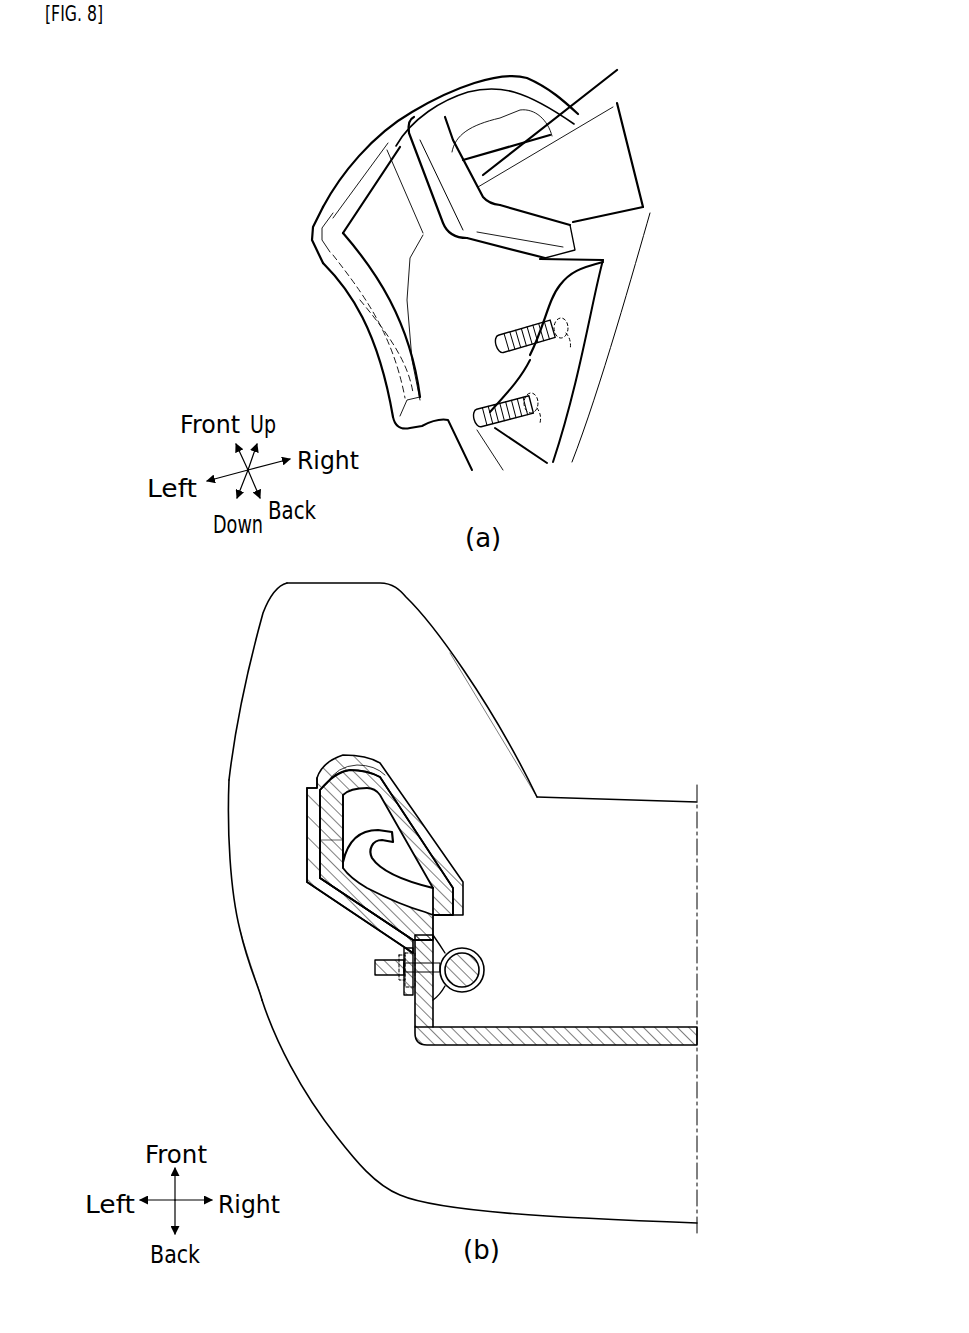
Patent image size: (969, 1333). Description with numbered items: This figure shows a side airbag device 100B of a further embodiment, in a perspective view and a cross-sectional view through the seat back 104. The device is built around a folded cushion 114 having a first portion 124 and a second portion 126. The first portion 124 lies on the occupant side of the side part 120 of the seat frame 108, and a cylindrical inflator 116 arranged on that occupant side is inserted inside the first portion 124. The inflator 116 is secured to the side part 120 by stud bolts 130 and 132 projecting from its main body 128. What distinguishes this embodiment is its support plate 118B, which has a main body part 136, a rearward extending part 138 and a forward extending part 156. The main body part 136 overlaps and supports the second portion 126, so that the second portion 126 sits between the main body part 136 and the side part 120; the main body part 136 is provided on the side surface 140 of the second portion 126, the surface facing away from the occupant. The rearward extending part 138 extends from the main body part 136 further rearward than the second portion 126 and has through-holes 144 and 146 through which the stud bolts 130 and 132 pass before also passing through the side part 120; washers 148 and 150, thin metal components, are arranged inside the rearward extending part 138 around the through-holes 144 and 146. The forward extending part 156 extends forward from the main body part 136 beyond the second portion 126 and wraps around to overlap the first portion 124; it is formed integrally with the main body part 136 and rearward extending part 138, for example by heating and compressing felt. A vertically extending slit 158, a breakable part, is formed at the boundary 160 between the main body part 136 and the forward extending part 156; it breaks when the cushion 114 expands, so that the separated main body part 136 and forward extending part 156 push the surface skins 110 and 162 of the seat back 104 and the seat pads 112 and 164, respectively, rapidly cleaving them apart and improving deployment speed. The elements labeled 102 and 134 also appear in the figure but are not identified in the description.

The side airbag device 100B is at (332, 106).
The vehicle body panel 102 is at (499, 650).
The seat back 104 is at (335, 1076).
The seat frame 108 is at (553, 1046).
The surface skin 110 is at (230, 868).
The seat pad 112 is at (257, 920).
The cushion 114 is at (442, 115).
The inflator 116 is at (480, 967).
The support plate 118B is at (329, 287).
The side part 120 is at (613, 153).
The first portion 124 is at (542, 104).
The second portion 126 is at (453, 183).
The main body 128 is at (480, 991).
The stud bolt 130 is at (520, 332).
The stud bolt 132 is at (487, 410).
The hook portion 134 is at (503, 183).
The main body part 136 is at (380, 361).
The rearward extending part 138 is at (547, 367).
The side surface 140 is at (330, 843).
The through-hole 144 is at (553, 320).
The through-hole 146 is at (540, 412).
The washer 148 is at (560, 338).
The washer 150 is at (537, 398).
The forward extending part 156 is at (493, 80).
The slit 158 is at (380, 167).
The boundary 160 is at (393, 137).
The surface skin 162 is at (500, 720).
The seat pad 164 is at (480, 780).